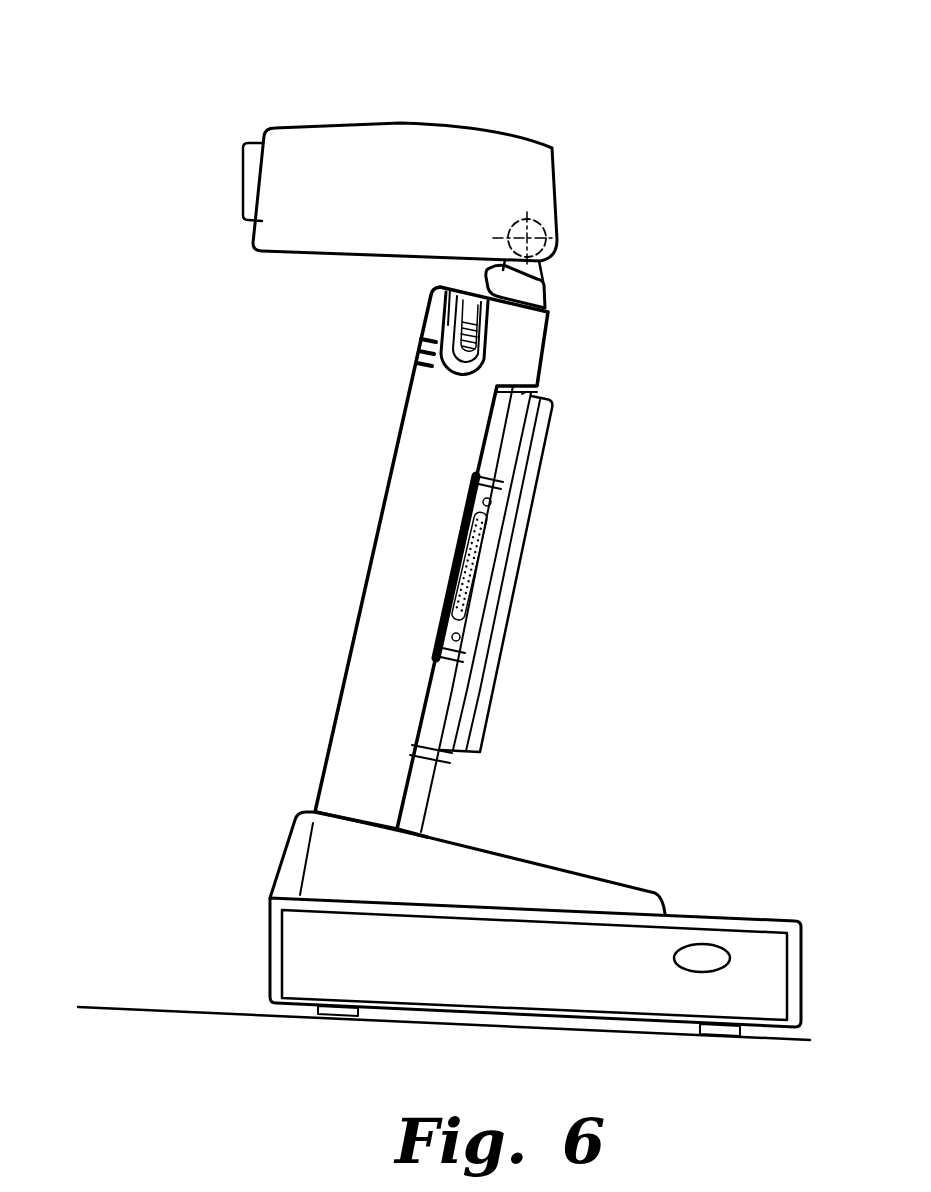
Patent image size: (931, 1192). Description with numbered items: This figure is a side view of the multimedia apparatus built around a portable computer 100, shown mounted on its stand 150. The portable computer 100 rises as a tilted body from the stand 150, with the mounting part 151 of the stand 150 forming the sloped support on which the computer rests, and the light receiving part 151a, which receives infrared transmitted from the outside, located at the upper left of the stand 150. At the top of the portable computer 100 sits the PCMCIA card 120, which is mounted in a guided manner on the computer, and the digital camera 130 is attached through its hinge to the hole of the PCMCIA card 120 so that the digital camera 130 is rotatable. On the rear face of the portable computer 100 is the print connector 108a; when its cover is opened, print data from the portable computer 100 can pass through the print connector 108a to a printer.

The digital camera 130 is at (376, 102).
The PCMCIA card 120 is at (547, 282).
The portable computer 100 is at (347, 428).
The print connector 108a is at (487, 562).
The light receiving part 151a is at (292, 837).
The mounting part 151 is at (525, 875).
The stand 150 is at (730, 893).